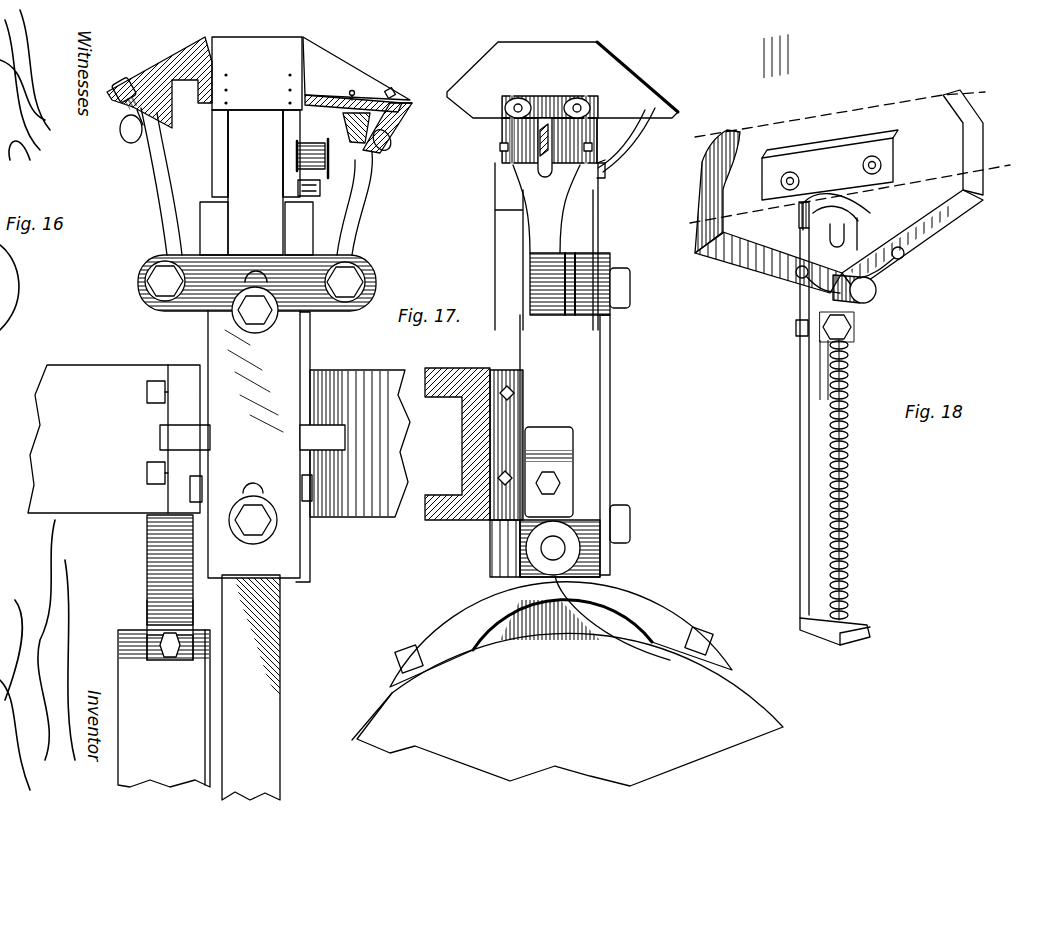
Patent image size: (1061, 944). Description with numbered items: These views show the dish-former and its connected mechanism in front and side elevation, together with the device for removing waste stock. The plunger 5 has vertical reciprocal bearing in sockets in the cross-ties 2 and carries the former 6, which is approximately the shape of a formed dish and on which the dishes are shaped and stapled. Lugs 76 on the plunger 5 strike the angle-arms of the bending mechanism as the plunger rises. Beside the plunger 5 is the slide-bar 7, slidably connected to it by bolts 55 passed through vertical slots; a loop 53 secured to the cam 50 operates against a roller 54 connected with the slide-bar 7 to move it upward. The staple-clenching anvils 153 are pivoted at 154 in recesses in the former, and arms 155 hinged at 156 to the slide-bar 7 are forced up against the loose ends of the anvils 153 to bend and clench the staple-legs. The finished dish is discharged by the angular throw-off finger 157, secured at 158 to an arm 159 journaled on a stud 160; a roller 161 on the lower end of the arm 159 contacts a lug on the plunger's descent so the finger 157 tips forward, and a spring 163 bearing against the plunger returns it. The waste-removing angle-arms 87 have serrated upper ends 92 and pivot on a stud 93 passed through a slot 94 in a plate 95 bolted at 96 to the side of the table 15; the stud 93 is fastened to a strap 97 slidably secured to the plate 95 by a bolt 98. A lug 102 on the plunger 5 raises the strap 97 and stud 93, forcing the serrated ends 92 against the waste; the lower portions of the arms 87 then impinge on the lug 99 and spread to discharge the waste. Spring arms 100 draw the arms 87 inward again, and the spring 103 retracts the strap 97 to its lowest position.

In FIG. 16, the cross-ties or braces 2 is at (219, 441).
In FIG. 17, the cross-ties or braces 2 is at (457, 444).
In FIG. 16, the plunger 5 is at (256, 455).
In FIG. 17, the plunger 5 is at (492, 203).
In FIG. 16, the dish-former 6 is at (352, 80).
In FIG. 17, the dish-former 6 is at (545, 92).
In FIG. 16, the slide-bar 7 is at (247, 376).
In FIG. 17, the slide-bar 7 is at (577, 410).
In FIG. 18, the bed-plate or table 15 is at (850, 157).
In FIG. 16, the cam 50 is at (164, 708).
In FIG. 17, the cam 50 is at (567, 706).
In FIG. 16, the loop 53 is at (152, 603).
In FIG. 17, the loop 53 is at (480, 622).
In FIG. 16, the roller 54 is at (156, 538).
In FIG. 17, the roller 54 is at (528, 548).
In FIG. 16, the bolts 55 is at (262, 304).
In FIG. 17, the bolts 55 is at (632, 312).
In FIG. 16, the lugs 76 is at (165, 435).
In FIG. 17, the lugs 76 is at (536, 426).
In FIG. 18, the waste-removing angle-arms 87 is at (752, 268).
In FIG. 18, the serrated upper ends 92 is at (740, 128).
In FIG. 18, the stud 93 is at (878, 289).
In FIG. 18, the slot 94 is at (852, 232).
In FIG. 18, the plate 95 is at (830, 116).
In FIG. 18, the bolts 96 is at (782, 181).
In FIG. 18, the strap or plate 97 is at (806, 392).
In FIG. 18, the bolt 98 is at (856, 327).
In FIG. 18, the lug 99 is at (799, 222).
In FIG. 18, the spring arms 100 is at (806, 288).
In FIG. 18, the lug 102 is at (796, 332).
In FIG. 18, the spring 103 is at (848, 372).
In FIG. 16, the anvils 153 is at (108, 94).
In FIG. 17, the anvils 153 is at (562, 95).
In FIG. 16, the anvil pivots 154 is at (413, 123).
In FIG. 17, the anvil pivots 154 is at (594, 102).
In FIG. 16, the arms 155 is at (175, 180).
In FIG. 17, the arms 155 is at (540, 220).
In FIG. 16, the hinges 156 is at (156, 285).
In FIG. 17, the hinges 156 is at (630, 288).
In FIG. 16, the discharge or throw-off plate or finger 157 is at (265, 85).
In FIG. 16, the securing point 158 is at (300, 60).
In FIG. 16, the arm 159 is at (292, 125).
In FIG. 17, the arm 159 is at (615, 148).
In FIG. 16, the stud 160 is at (333, 164).
In FIG. 17, the stud 160 is at (600, 174).
In FIG. 16, the roller 161 is at (322, 200).
In FIG. 16, the spring 163 is at (333, 150).
In FIG. 17, the spring 163 is at (604, 160).